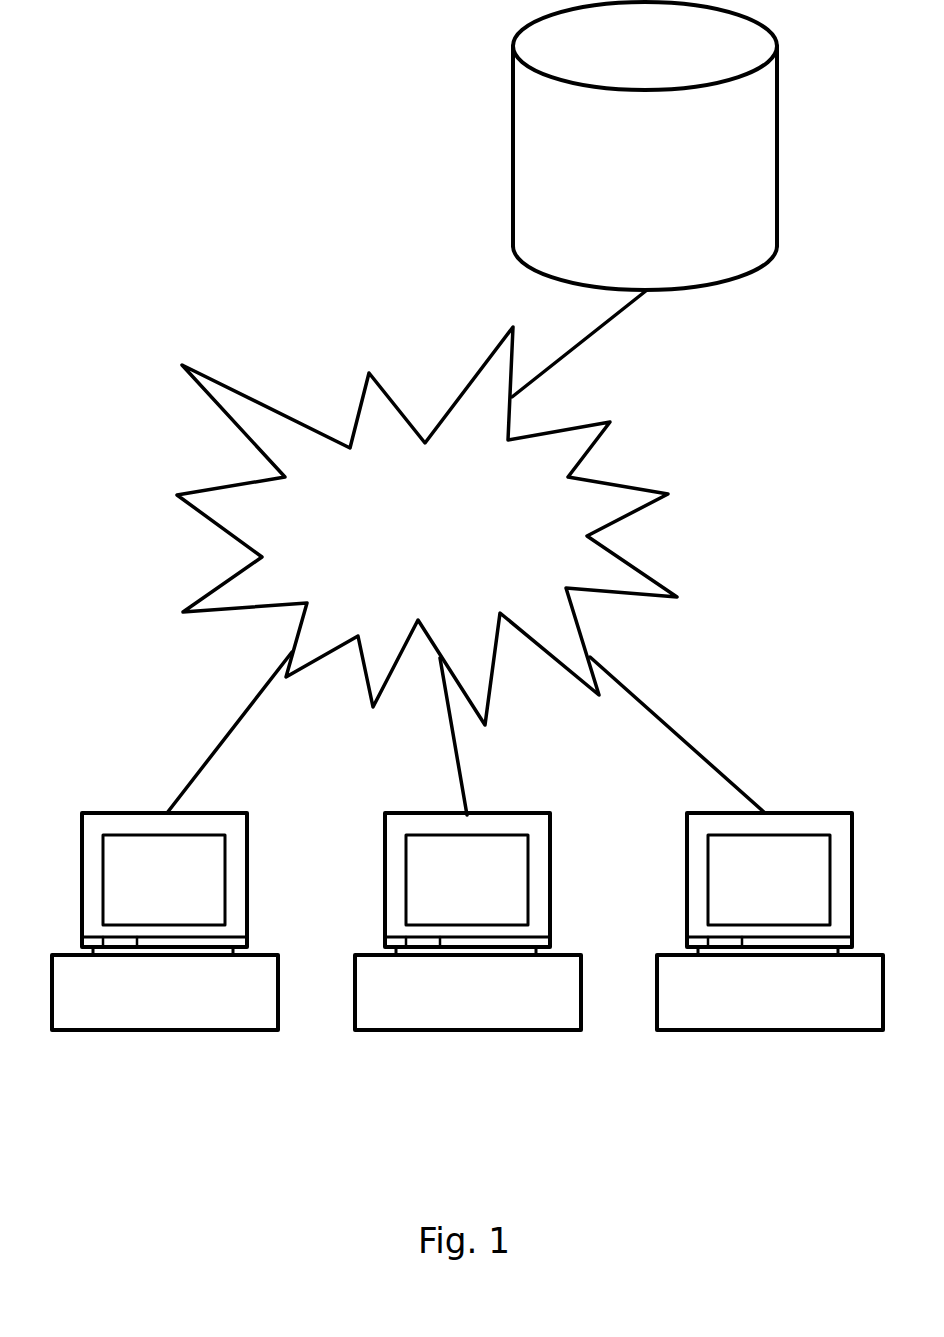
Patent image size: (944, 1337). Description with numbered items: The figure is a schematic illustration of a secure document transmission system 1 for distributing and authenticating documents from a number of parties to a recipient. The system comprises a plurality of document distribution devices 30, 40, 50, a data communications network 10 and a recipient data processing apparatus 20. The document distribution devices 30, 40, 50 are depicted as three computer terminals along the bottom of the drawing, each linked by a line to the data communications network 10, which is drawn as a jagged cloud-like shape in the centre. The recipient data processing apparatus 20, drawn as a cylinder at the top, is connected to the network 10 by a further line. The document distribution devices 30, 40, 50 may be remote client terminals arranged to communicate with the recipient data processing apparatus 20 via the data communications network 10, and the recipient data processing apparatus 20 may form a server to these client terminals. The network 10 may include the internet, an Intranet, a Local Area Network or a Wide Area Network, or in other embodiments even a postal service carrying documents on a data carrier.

The secure document transmission system 1 is at (240, 156).
The data communications network 10 is at (397, 545).
The recipient data processing apparatus 20 is at (763, 172).
The document distribution device 30 is at (138, 1022).
The document distribution device 40 is at (452, 1022).
The document distribution device 50 is at (758, 1022).